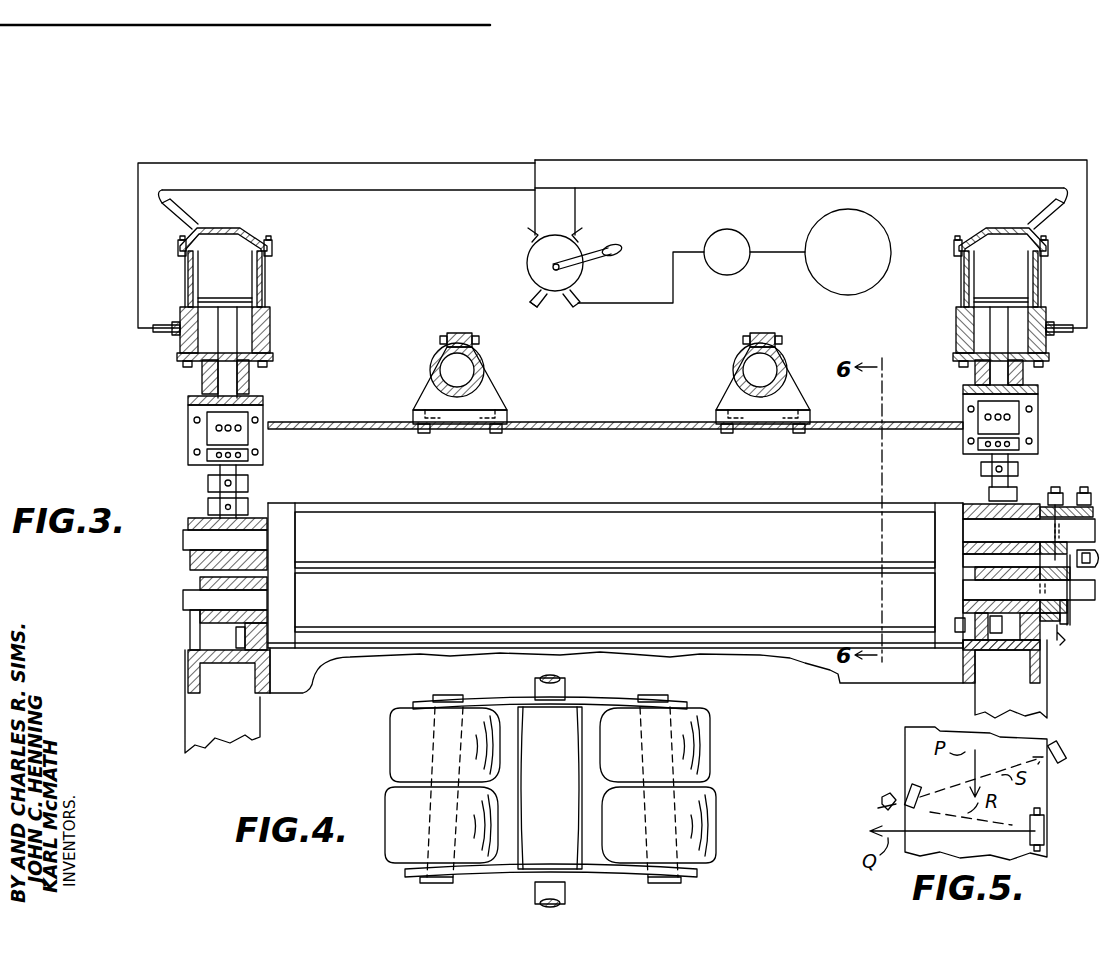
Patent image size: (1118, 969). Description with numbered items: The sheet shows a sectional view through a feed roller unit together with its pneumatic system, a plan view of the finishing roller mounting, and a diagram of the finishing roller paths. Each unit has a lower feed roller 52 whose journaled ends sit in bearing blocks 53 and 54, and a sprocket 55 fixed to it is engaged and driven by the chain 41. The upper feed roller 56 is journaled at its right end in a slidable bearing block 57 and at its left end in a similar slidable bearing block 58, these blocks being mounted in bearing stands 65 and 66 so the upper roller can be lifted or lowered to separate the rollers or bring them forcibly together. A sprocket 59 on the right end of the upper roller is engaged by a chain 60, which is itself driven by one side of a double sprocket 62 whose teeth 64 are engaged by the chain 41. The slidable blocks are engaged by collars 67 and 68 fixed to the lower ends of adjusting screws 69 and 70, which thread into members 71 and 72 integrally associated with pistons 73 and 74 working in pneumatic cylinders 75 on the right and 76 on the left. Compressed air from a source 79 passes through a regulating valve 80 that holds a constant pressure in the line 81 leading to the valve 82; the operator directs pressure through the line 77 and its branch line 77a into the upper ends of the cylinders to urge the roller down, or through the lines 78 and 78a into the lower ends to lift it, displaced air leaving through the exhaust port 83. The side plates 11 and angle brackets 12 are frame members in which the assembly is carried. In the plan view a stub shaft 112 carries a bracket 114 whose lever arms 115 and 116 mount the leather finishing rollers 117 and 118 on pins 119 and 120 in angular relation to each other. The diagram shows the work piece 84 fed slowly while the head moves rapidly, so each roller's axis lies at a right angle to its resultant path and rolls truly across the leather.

In FIG. 3, the side frame plate 11 is at (198, 724).
In FIG. 3, the angle bracket 12 is at (186, 668).
In FIG. 3, the drive chain 41 is at (1076, 635).
In FIG. 3, the lower feed roller 52 is at (615, 602).
In FIG. 3, the bearing block 53 is at (962, 648).
In FIG. 3, the bearing block 54 is at (198, 627).
In FIG. 3, the sprocket 55 is at (1068, 610).
In FIG. 3, the upper feed roller 56 is at (615, 540).
In FIG. 3, the slidable bearing block 57 is at (962, 500).
In FIG. 3, the slidable bearing block 58 is at (255, 515).
In FIG. 3, the sprocket 59 is at (1070, 575).
In FIG. 3, the chain 60 is at (1100, 470).
In FIG. 3, the double sprocket 62 is at (1065, 502).
In FIG. 3, the teeth 64 is at (1056, 488).
In FIG. 3, the bearing stand 65 is at (1027, 448).
In FIG. 3, the bearing stand 66 is at (185, 478).
In FIG. 3, the collar 67 is at (994, 500).
In FIG. 3, the collar 68 is at (205, 510).
In FIG. 3, the adjusting screw 69 is at (1000, 455).
In FIG. 3, the adjusting screw 70 is at (240, 495).
In FIG. 3, the member 71 is at (1024, 375).
In FIG. 3, the member 72 is at (250, 385).
In FIG. 3, the piston 73 is at (1010, 292).
In FIG. 3, the piston 74 is at (240, 292).
In FIG. 3, the pneumatic cylinder 75 is at (958, 262).
In FIG. 3, the pneumatic cylinder 76 is at (268, 262).
In FIG. 3, the supply line 77 is at (580, 212).
In FIG. 3, the branch line 77a is at (352, 187).
In FIG. 3, the supply line 78 is at (810, 157).
In FIG. 3, the branch line 78a is at (352, 160).
In FIG. 3, the source of compressed air 79 is at (878, 222).
In FIG. 3, the regulating valve 80 is at (712, 232).
In FIG. 3, the line 81 is at (625, 310).
In FIG. 3, the valve 82 is at (525, 255).
In FIG. 3, the exhaust port 83 is at (528, 290).
In FIG. 5, the work piece 84 is at (1047, 850).
In FIG. 4, the stub shaft 112 is at (564, 686).
In FIG. 4, the bracket 114 is at (672, 690).
In FIG. 4, the lever arm 115 is at (433, 690).
In FIG. 4, the lever arm 116 is at (516, 690).
In FIG. 4, the leather finishing roller 117 is at (388, 760).
In FIG. 5, the leather finishing roller 117 is at (878, 803).
In FIG. 4, the leather finishing roller 118 is at (700, 712).
In FIG. 5, the leather finishing roller 118 is at (912, 785).
In FIG. 4, the pin 119 is at (440, 883).
In FIG. 4, the pin 120 is at (665, 883).